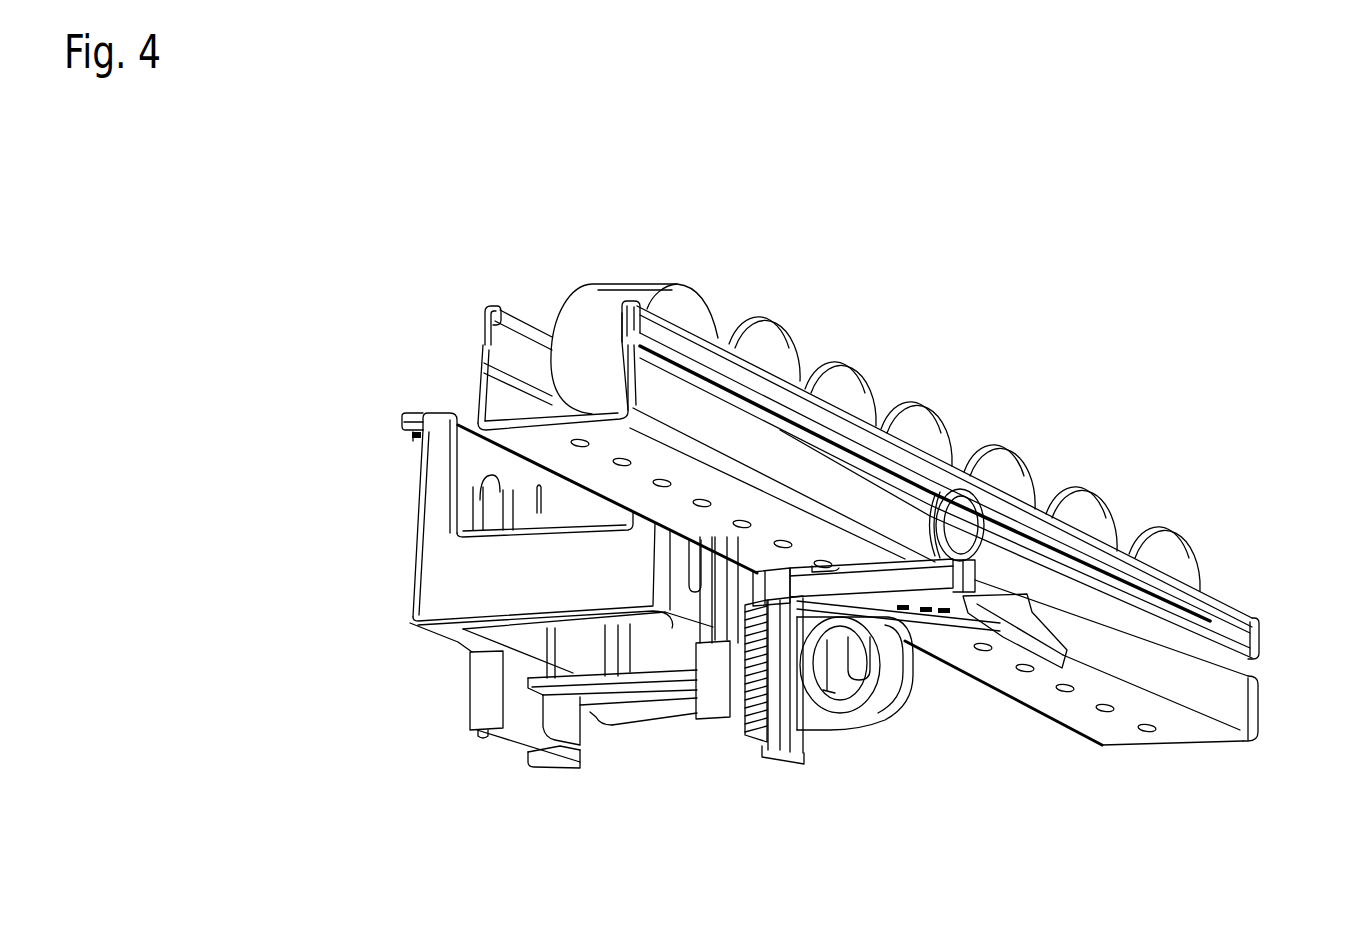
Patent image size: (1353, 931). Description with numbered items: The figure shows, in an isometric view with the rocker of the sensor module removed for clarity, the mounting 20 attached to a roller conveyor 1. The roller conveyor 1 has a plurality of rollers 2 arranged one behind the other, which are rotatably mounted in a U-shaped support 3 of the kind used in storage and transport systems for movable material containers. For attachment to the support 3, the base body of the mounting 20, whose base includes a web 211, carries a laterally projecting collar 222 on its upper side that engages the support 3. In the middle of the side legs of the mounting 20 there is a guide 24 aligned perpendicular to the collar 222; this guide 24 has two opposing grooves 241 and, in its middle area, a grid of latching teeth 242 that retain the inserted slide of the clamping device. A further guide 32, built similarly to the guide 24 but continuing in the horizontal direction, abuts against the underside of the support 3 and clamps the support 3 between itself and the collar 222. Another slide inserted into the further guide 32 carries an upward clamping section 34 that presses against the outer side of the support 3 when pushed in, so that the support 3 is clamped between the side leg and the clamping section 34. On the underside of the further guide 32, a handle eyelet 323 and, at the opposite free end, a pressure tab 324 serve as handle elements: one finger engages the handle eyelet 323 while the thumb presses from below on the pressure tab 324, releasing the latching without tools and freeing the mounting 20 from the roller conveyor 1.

The roller conveyor 1 is at (1257, 560).
The roller 2 is at (1167, 552).
The support 3 is at (1235, 698).
The mounting 20 is at (420, 664).
The collar 222 is at (420, 425).
The web 211 is at (640, 690).
The guide 24 is at (487, 706).
The groove 241 is at (712, 692).
The latching teeth 242 is at (740, 750).
The further guide 32 is at (846, 586).
The clamping section 34 is at (918, 520).
The handle eyelet 323 is at (887, 707).
The pressure tab 324 is at (1028, 643).